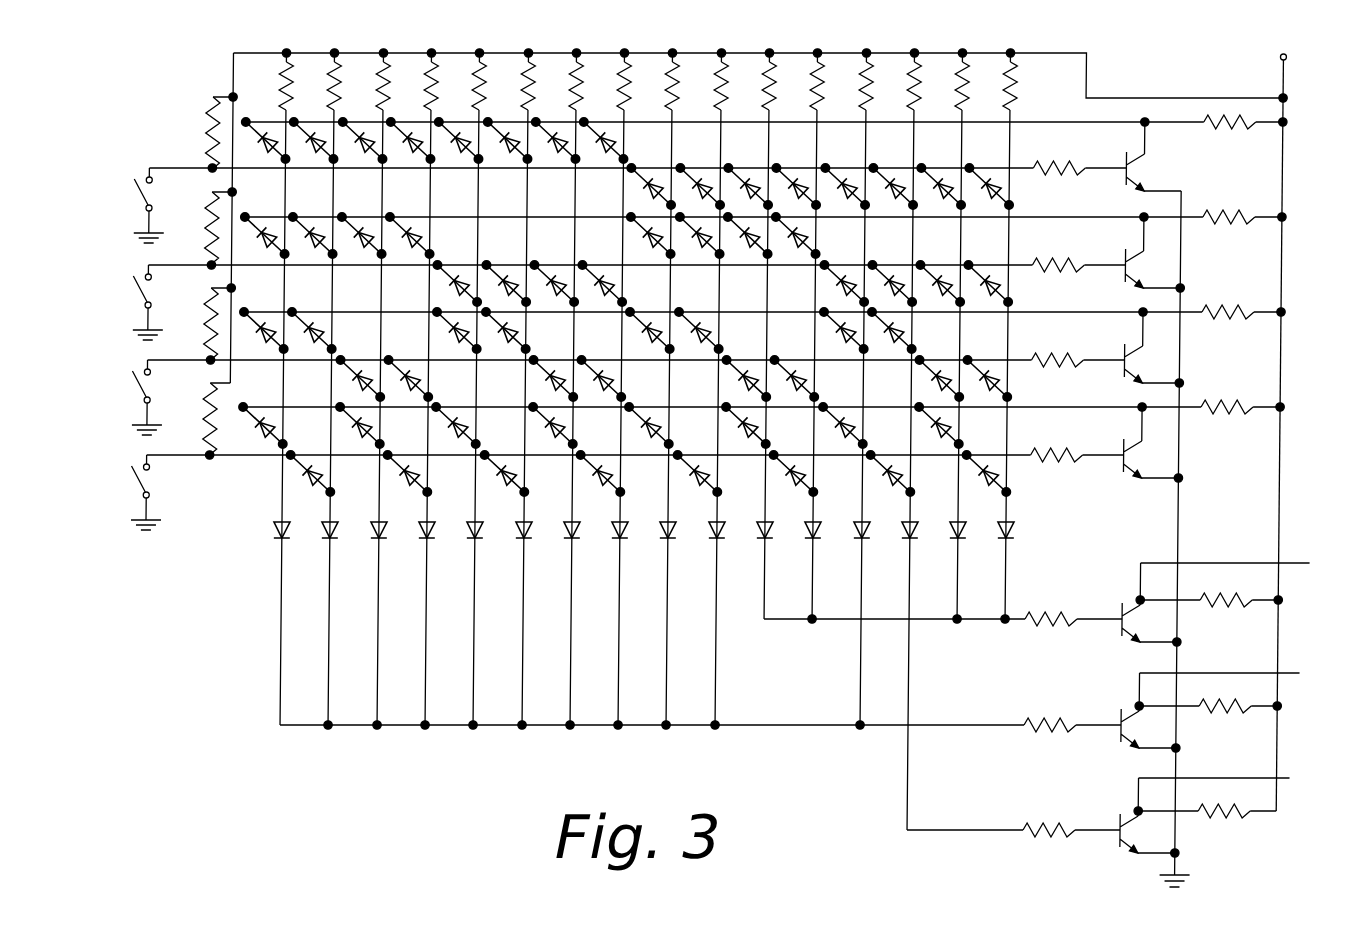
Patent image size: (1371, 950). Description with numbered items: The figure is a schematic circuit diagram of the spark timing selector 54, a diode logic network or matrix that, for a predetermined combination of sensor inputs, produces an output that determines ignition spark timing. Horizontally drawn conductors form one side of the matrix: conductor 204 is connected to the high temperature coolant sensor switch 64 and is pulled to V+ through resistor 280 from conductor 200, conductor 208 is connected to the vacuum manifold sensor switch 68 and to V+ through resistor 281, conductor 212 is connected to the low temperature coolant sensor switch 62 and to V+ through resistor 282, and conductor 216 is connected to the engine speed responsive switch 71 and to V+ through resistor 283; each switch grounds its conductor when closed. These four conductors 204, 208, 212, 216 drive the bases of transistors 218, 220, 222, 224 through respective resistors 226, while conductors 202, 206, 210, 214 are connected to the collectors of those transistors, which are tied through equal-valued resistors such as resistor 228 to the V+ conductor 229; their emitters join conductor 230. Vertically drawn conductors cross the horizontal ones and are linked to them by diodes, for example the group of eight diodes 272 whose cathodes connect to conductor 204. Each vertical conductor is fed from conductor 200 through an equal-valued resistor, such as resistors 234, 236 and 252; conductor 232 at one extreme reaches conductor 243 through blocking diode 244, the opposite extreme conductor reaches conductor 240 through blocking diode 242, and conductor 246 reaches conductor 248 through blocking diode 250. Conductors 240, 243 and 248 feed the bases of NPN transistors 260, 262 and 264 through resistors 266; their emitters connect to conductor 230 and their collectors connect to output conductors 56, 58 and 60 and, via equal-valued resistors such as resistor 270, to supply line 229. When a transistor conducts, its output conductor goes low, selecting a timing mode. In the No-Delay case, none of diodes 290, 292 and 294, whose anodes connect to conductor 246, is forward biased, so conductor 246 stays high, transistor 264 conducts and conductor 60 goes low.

The conductor 200 is at (704, 50).
The resistor 236 is at (284, 98).
The resistor 252 is at (913, 80).
The resistor 234 is at (1016, 88).
The resistor 280 is at (210, 125).
The resistor 281 is at (210, 222).
The resistor 282 is at (210, 320).
The resistor 283 is at (210, 416).
The high temperature coolant sensor switch 64 is at (138, 192).
The vacuum manifold sensor switch 68 is at (138, 290).
The low temperature coolant sensor switch 62 is at (138, 386).
The engine speed responsive switch 71 is at (138, 480).
The conductor 204 is at (320, 170).
The conductor 208 is at (275, 267).
The conductor 212 is at (270, 362).
The conductor 216 is at (255, 458).
The conductor 232 is at (285, 500).
The conductor 202 is at (704, 124).
The conductor 206 is at (465, 219).
The conductor 210 is at (373, 313).
The conductor 214 is at (322, 409).
The resistor 228 is at (1235, 125).
The resistor 226 is at (1051, 165).
The diode 290 is at (901, 190).
The diodes 272 is at (854, 206).
The diode 292 is at (903, 290).
The conductor 246 is at (915, 264).
The diode 294 is at (897, 482).
The blocking diode 250 is at (916, 540).
The blocking diode 242 is at (1015, 537).
The blocking diode 244 is at (280, 535).
The conductor 248 is at (915, 790).
The conductor 243 is at (609, 727).
The conductor 240 is at (981, 621).
The resistor 266 is at (1052, 626).
The NPN transistor 260 is at (1127, 648).
The NPN transistor 262 is at (1127, 750).
The NPN transistor 264 is at (1125, 838).
The resistor 270 is at (1236, 608).
The conductor 56 is at (1315, 564).
The conductor 58 is at (1306, 674).
The conductor 60 is at (1297, 779).
The conductor 230 is at (1183, 540).
The conductor 229 is at (1286, 196).
The spark timing selector 54 is at (1135, 87).
The transistor 218 is at (1146, 170).
The transistor 220 is at (1131, 278).
The transistor 222 is at (1130, 372).
The transistor 224 is at (1130, 466).